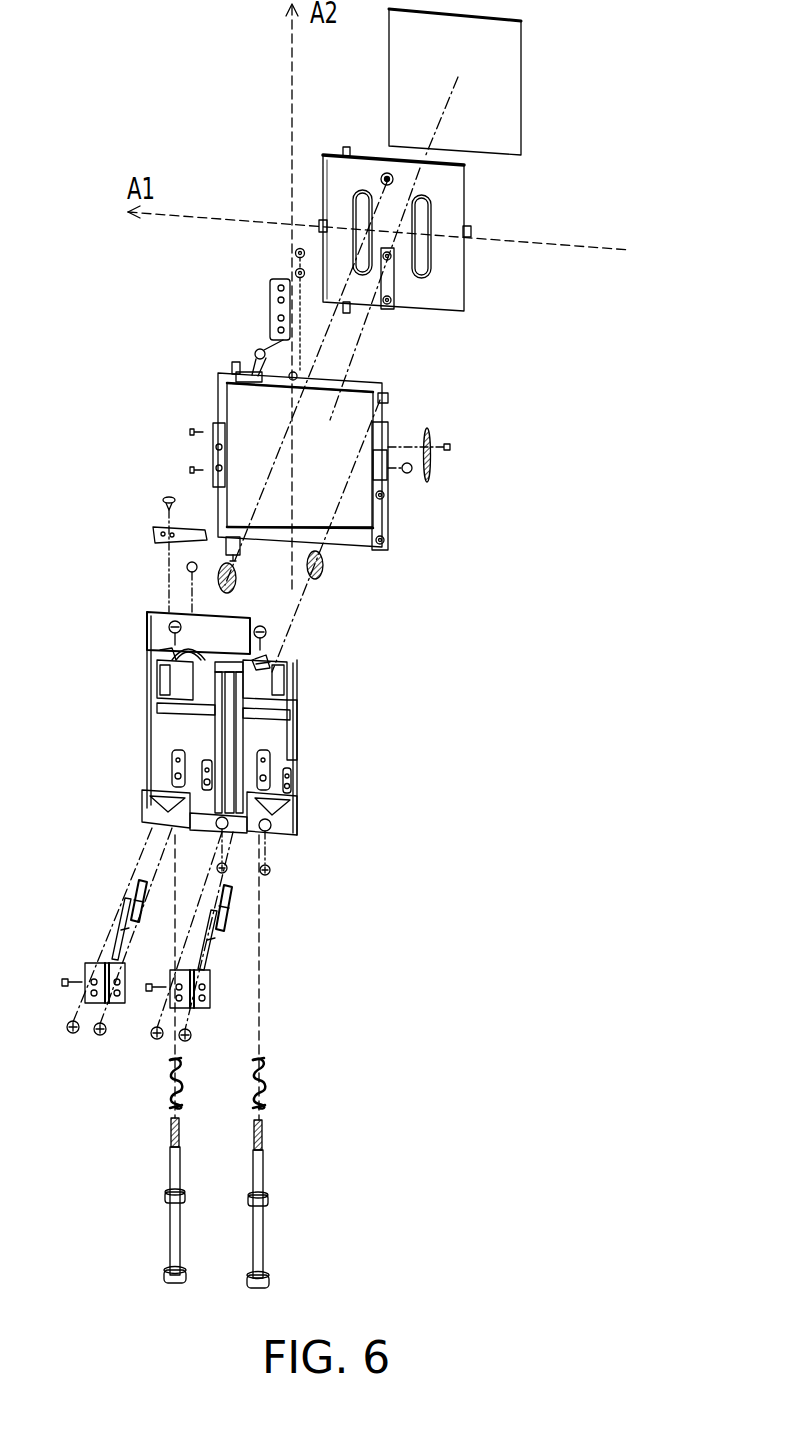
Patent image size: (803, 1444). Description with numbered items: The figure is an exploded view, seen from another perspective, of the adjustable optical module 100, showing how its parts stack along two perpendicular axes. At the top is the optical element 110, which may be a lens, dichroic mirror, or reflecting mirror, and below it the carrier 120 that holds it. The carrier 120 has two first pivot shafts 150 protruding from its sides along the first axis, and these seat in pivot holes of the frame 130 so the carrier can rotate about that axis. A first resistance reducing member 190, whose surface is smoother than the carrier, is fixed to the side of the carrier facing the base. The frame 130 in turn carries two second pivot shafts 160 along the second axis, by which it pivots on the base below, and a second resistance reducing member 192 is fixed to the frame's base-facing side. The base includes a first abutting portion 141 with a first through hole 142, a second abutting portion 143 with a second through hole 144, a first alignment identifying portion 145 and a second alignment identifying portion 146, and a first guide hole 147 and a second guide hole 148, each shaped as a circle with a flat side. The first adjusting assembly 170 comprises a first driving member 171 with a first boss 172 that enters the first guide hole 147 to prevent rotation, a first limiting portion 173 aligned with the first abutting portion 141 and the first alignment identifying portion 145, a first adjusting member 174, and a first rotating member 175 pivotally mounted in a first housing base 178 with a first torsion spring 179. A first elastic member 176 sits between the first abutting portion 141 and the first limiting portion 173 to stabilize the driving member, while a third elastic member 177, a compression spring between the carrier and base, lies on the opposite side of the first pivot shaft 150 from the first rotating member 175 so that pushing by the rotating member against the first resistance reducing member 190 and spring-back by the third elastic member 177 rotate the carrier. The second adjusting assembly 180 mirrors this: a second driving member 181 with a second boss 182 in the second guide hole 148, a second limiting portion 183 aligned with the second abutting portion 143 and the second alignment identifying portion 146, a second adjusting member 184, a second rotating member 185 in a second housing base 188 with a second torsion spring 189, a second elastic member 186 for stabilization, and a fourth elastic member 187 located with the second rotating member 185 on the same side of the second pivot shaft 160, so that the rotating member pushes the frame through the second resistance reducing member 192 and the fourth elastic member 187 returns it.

The adjustable optical module 100 is at (645, 28).
The optical element 110 is at (521, 80).
The carrier 120 is at (462, 287).
The frame 130 is at (376, 390).
The first abutting portion 141 is at (158, 690).
The first through hole 142 is at (158, 656).
The second abutting portion 143 is at (272, 690).
The second through hole 144 is at (268, 663).
The first alignment identifying portion 145 is at (163, 722).
The second alignment identifying portion 146 is at (288, 740).
The first guide hole 147 is at (160, 780).
The second guide hole 148 is at (276, 787).
The first pivot shaft 150 is at (470, 232).
The second pivot shaft 160 is at (262, 380).
The first adjusting assembly 170 is at (104, 1143).
The first driving member 171 is at (175, 1235).
The first boss 172 is at (168, 1276).
The first limiting portion 173 is at (167, 1196).
The first adjusting member 174 is at (168, 628).
The first rotating member 175 is at (140, 884).
The first elastic member 176 is at (170, 1087).
The third elastic member 177 is at (236, 582).
The first housing base 178 is at (100, 965).
The first torsion spring 179 is at (124, 920).
The second adjusting assembly 180 is at (331, 1140).
The second driving member 181 is at (262, 1237).
The second boss 182 is at (264, 1282).
The second limiting portion 183 is at (267, 1199).
The second adjusting member 184 is at (268, 633).
The second rotating member 185 is at (232, 895).
The second elastic member 186 is at (264, 1088).
The fourth elastic member 187 is at (323, 567).
The second housing base 188 is at (215, 968).
The second torsion spring 189 is at (215, 942).
The first resistance reducing member 190 is at (386, 290).
The second resistance reducing member 192 is at (387, 520).